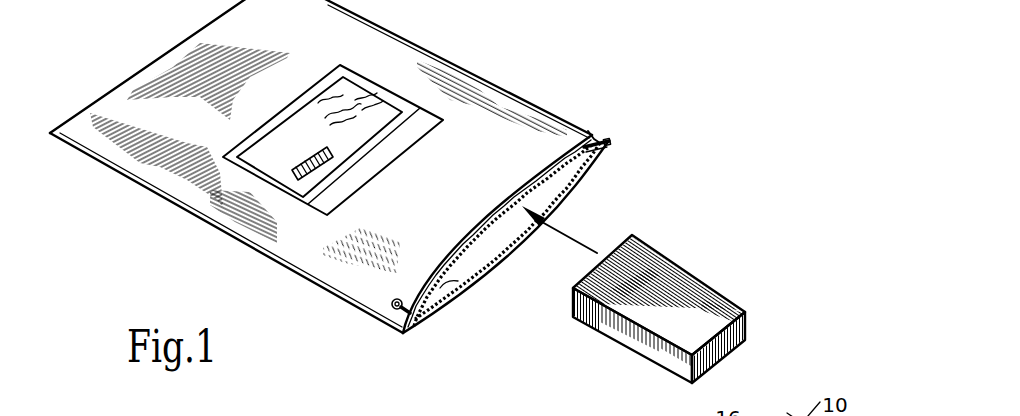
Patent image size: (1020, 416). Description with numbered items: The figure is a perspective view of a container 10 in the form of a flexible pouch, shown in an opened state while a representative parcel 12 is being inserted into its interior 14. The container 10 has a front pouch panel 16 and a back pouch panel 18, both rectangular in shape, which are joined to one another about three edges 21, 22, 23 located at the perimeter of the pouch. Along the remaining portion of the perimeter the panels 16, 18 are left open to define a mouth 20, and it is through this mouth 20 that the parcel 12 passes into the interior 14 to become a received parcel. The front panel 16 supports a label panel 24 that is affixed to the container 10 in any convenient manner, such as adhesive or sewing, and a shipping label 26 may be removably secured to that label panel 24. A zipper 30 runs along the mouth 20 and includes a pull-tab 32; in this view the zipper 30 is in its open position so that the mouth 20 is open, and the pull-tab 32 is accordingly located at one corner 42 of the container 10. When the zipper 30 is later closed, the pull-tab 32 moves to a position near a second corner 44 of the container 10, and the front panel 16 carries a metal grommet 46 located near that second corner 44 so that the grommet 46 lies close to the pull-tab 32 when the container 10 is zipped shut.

The container 10 is at (620, 56).
The parcel 12 is at (745, 262).
The interior 14 is at (481, 273).
The front pouch panel 16 is at (480, 83).
The back pouch panel 18 is at (483, 279).
The mouth 20 is at (562, 190).
The edge 21 is at (417, 40).
The edge 22 is at (277, 262).
The edge 23 is at (193, 35).
The label panel 24 is at (352, 183).
The shipping label 26 is at (304, 118).
The zipper 30 is at (576, 174).
The pull-tab 32 is at (588, 132).
The corner 42 is at (598, 142).
The second corner 44 is at (407, 333).
The metal grommet 46 is at (392, 307).